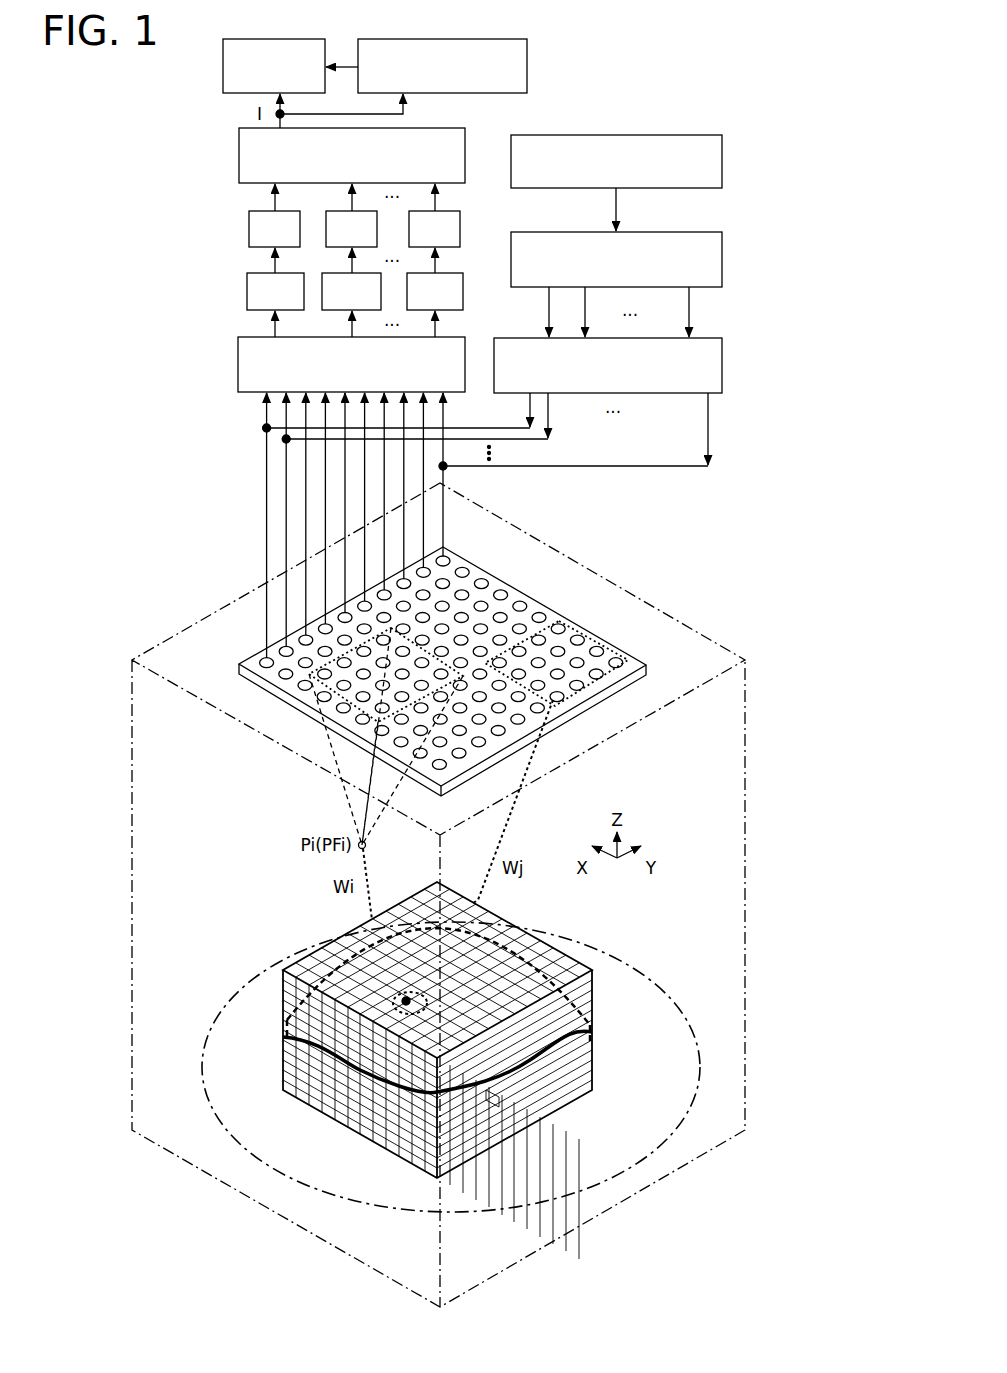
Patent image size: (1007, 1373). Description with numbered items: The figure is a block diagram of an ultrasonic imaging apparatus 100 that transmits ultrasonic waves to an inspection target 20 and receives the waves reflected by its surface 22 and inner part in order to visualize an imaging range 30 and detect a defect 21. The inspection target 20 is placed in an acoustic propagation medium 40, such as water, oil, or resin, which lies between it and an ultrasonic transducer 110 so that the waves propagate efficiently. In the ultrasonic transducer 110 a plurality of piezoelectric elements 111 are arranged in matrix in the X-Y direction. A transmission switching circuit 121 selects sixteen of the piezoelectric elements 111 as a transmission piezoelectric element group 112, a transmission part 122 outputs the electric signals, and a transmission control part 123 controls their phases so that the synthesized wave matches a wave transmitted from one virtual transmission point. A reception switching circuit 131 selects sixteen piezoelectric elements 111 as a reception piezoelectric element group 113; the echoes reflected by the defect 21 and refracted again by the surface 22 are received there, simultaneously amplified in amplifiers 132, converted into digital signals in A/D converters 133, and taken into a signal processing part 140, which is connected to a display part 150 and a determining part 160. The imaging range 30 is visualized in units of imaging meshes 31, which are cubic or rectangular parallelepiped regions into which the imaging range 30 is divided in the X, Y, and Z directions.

The ultrasonic imaging apparatus 100 is at (138, 288).
The ultrasonic transducer 110 is at (436, 671).
The piezoelectric element 111 is at (280, 679).
The transmission piezoelectric element group 112 is at (366, 708).
The reception piezoelectric element group 113 is at (538, 627).
The transmission switching circuit 121 is at (722, 363).
The transmission part 122 is at (722, 257).
The transmission control part 123 is at (722, 160).
The reception switching circuit 131 is at (238, 361).
The amplifier 132 is at (247, 295).
The A/D converter 133 is at (249, 234).
The signal processing part 140 is at (239, 163).
The display part 150 is at (277, 39).
The determining part 160 is at (403, 39).
The inspection target 20 is at (200, 1024).
The defect 21 is at (428, 1004).
The surface 22 is at (318, 1043).
The imaging range 30 is at (592, 1068).
The imaging mesh 31 is at (507, 1100).
The acoustic propagation medium 40 is at (669, 619).